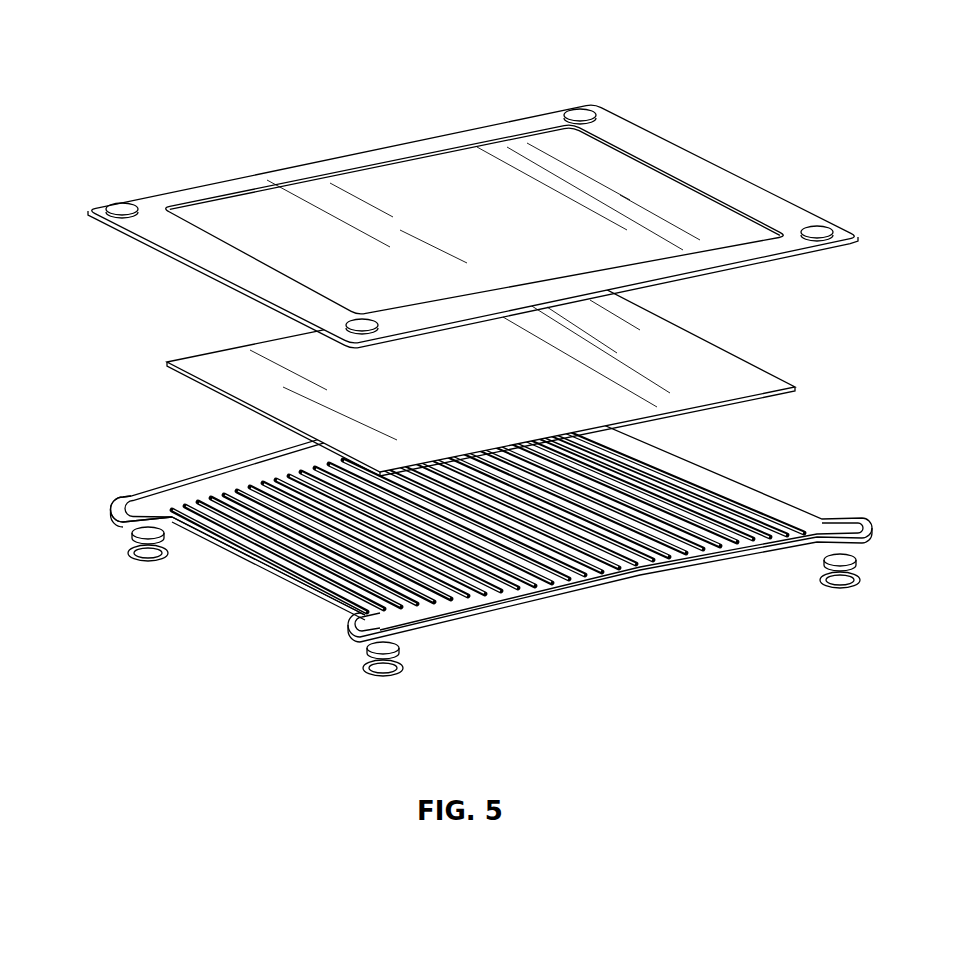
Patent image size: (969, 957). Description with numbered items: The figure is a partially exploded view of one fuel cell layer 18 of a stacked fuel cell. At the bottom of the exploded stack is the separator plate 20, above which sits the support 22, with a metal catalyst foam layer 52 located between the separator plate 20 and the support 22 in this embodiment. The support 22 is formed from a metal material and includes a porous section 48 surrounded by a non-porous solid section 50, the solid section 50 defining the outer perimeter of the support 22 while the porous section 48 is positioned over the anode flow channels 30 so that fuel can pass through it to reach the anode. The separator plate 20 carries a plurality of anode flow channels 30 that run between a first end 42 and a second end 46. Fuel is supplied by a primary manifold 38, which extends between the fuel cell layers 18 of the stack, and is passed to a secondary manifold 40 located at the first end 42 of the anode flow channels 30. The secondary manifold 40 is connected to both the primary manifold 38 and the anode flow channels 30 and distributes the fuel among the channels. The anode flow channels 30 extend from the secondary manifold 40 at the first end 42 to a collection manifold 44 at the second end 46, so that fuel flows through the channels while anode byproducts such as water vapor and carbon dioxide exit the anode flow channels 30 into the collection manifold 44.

The fuel cell layer 18 is at (230, 46).
The separator plate 20 is at (198, 522).
The support 22 is at (440, 226).
The anode flow channels 30 is at (302, 542).
The primary manifold 38 is at (345, 632).
The secondary manifold 40 is at (610, 588).
The first end 42 is at (325, 600).
The collection manifold 44 is at (272, 470).
The second end 46 is at (160, 505).
The porous section 48 is at (253, 207).
The solid section 50 is at (725, 175).
The metal catalyst foam layer 52 is at (163, 388).